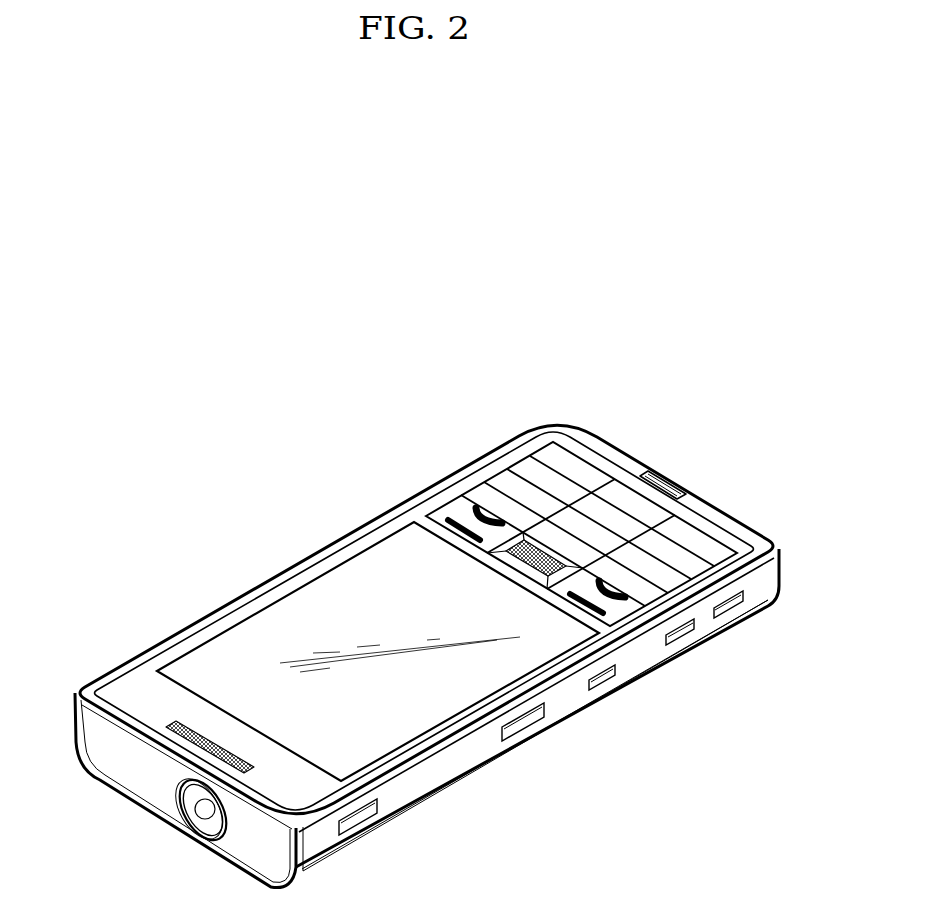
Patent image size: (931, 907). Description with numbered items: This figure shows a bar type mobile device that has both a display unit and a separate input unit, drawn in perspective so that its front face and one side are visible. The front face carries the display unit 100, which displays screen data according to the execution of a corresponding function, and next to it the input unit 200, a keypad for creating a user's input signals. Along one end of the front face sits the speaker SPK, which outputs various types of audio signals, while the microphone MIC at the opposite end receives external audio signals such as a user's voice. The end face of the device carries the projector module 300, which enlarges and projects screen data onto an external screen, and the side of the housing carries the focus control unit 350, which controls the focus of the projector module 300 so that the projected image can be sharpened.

The display unit 100 is at (319, 626).
The input unit 200 is at (704, 546).
The projector module 300 is at (207, 815).
The focus control unit 350 is at (363, 814).
The microphone MIC is at (666, 480).
The speaker SPK is at (201, 734).